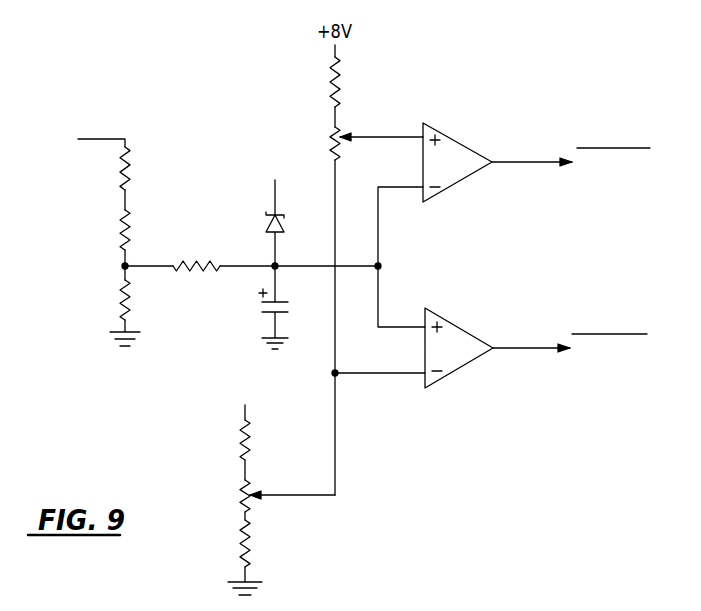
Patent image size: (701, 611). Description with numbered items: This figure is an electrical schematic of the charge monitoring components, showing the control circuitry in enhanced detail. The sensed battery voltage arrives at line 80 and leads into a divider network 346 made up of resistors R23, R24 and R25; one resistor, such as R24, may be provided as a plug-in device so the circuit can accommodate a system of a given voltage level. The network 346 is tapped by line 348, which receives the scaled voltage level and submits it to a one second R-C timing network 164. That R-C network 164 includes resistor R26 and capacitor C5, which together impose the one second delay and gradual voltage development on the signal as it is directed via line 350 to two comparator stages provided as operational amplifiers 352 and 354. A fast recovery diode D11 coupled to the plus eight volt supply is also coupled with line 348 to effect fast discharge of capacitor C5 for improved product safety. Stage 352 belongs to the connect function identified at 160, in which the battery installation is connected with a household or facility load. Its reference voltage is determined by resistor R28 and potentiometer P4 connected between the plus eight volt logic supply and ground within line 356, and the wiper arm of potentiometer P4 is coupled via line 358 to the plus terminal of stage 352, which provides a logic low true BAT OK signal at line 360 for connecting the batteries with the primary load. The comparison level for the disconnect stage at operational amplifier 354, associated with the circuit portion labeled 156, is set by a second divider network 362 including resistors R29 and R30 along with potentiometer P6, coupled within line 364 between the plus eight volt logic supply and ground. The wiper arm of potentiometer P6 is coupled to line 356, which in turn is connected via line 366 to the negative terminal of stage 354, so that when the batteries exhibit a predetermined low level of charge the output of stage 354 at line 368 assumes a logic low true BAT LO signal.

The line 80 is at (92, 140).
The divider network 346 is at (104, 246).
The line 348 is at (160, 268).
The line 350 is at (380, 244).
The operational amplifier 352 is at (450, 190).
The operational amplifier 354 is at (450, 320).
The line 356 is at (337, 172).
The line 358 is at (388, 136).
The line 360 is at (522, 160).
The divider network 362 is at (245, 488).
The line 364 is at (240, 463).
The line 366 is at (372, 375).
The line 368 is at (523, 347).
The connect stage 160 is at (474, 135).
The R-C timing network 164 is at (266, 241).
The disconnect comparator circuit 156 is at (490, 363).
The resistor R23 is at (133, 175).
The resistor R24 is at (133, 238).
The resistor R25 is at (117, 300).
The resistor R26 is at (205, 262).
The resistor R28 is at (340, 70).
The resistor R29 is at (254, 437).
The resistor R30 is at (255, 556).
The potentiometer P4 is at (332, 130).
The potentiometer P6 is at (252, 482).
The fast recovery diode D11 is at (285, 222).
The capacitor C5 is at (287, 308).